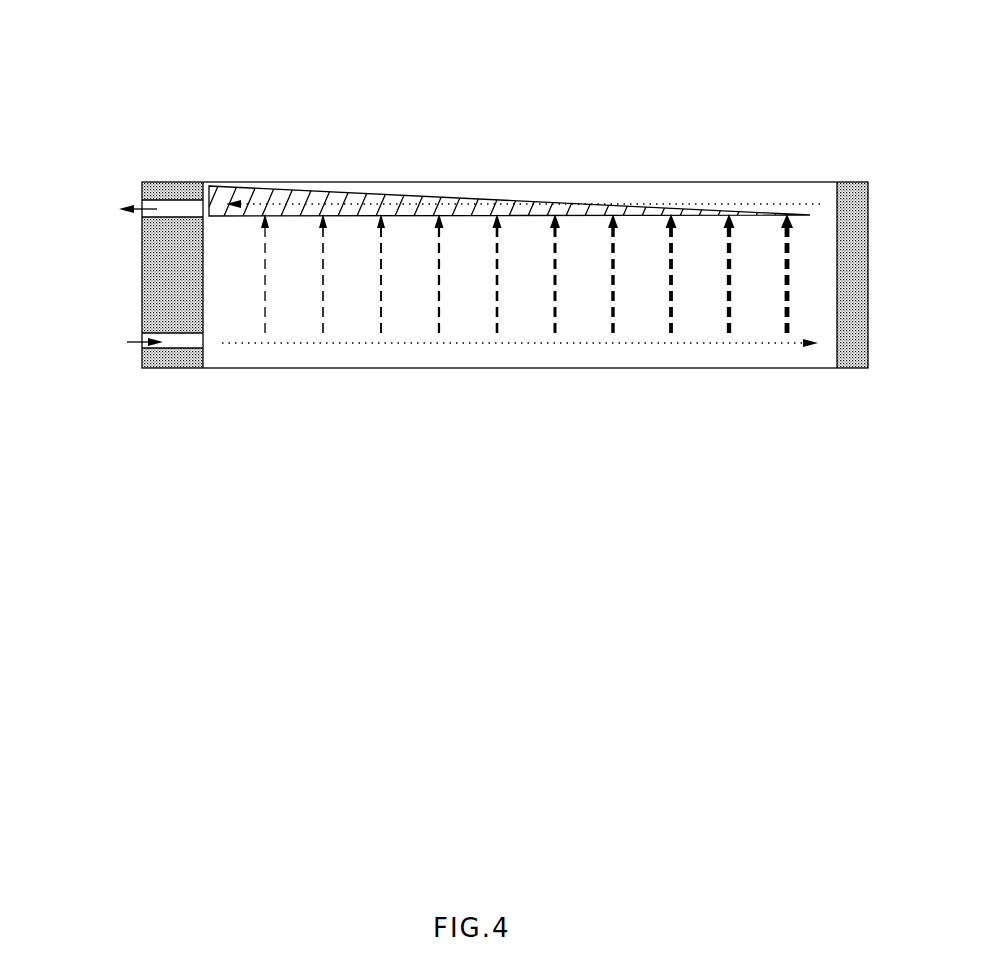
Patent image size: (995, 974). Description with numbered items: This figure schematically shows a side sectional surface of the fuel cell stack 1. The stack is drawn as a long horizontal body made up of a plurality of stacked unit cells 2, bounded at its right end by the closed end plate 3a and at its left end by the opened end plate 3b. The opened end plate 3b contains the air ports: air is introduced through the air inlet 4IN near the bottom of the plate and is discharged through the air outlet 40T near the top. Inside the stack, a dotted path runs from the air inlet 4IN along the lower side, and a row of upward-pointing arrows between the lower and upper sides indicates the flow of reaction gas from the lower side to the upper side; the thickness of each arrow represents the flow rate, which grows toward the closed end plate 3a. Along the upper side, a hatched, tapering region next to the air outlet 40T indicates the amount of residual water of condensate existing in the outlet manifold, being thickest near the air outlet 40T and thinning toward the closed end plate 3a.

The fuel cell stack 1 is at (61, 44).
The unit cells 2 is at (674, 192).
The closed end plate 3a is at (848, 190).
The opened end plate 3b is at (163, 294).
The air outlet 40T is at (145, 213).
The air inlet 4IN is at (143, 348).